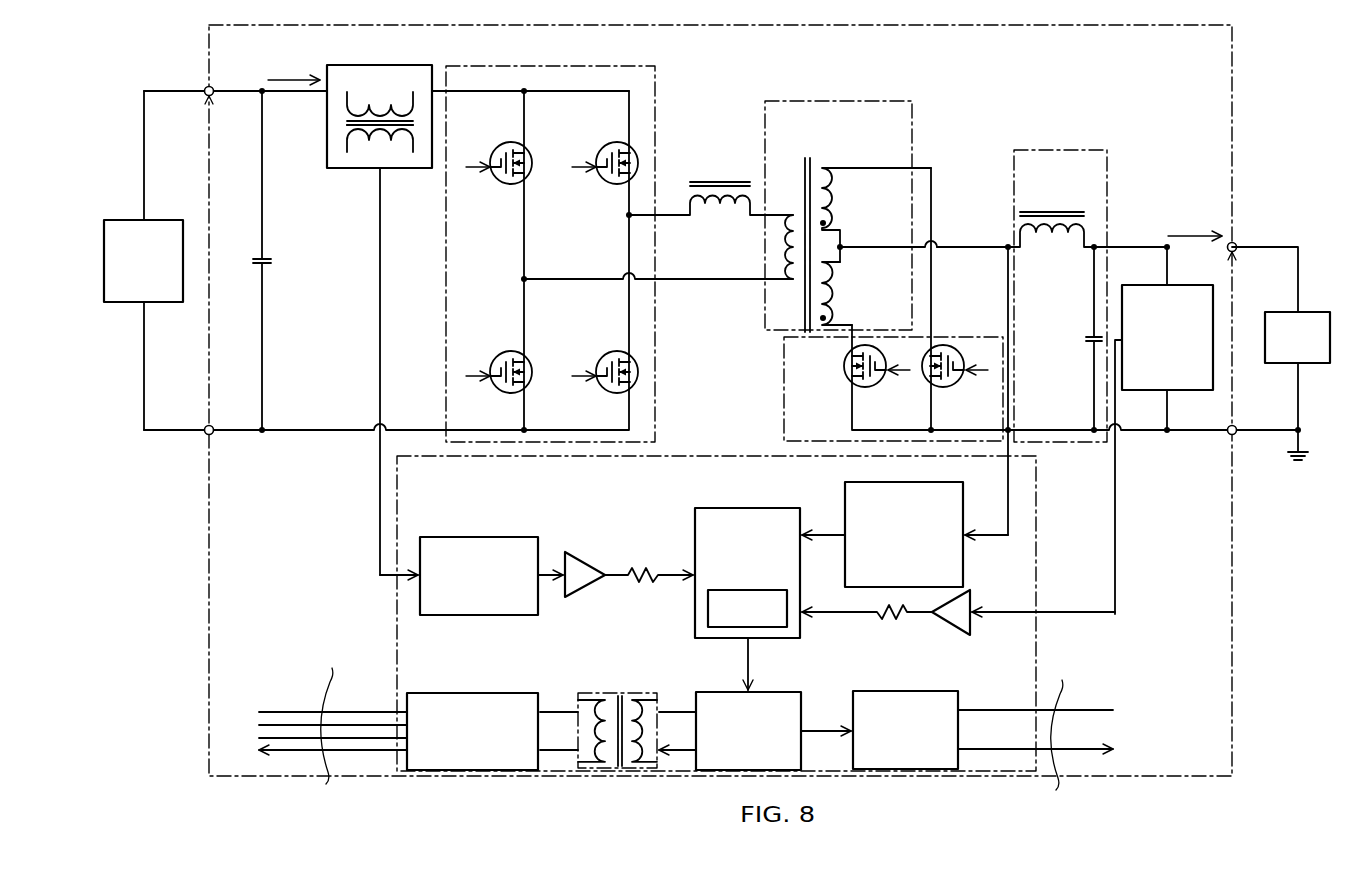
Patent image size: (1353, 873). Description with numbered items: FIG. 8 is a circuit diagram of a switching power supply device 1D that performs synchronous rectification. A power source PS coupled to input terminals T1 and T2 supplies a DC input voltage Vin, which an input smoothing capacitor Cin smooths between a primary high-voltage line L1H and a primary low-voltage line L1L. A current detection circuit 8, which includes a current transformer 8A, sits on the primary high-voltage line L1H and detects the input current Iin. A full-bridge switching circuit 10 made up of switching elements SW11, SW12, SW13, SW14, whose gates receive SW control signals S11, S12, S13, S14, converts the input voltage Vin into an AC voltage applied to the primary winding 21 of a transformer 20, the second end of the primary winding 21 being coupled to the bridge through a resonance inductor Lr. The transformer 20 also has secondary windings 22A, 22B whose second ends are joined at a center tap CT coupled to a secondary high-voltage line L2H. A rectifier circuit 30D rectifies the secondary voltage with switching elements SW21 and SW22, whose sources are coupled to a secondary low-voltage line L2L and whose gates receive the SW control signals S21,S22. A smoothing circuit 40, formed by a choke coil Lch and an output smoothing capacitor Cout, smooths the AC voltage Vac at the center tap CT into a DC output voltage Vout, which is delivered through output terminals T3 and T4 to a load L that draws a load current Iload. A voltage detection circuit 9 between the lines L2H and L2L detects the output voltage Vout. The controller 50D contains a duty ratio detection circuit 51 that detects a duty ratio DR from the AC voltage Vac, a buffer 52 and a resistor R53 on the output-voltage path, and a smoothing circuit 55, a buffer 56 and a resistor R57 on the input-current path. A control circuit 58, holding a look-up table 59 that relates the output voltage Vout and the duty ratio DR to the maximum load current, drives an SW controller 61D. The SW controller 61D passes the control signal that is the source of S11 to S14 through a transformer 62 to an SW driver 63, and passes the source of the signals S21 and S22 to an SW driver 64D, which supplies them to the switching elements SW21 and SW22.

The switching power supply device 1D is at (676, 27).
The power source PS is at (150, 219).
The input terminal T1 is at (208, 86).
The input terminal T2 is at (206, 437).
The primary high-voltage line L1H is at (237, 88).
The primary low-voltage line L1L is at (237, 437).
The input smoothing capacitor Cin is at (254, 256).
The input voltage Vin is at (292, 98).
The input current Iin is at (294, 65).
The current detection circuit 8 is at (343, 66).
The current transformer 8A is at (418, 142).
The switching circuit 10 is at (548, 66).
The switching element SW11 is at (510, 140).
The switching element SW12 is at (510, 349).
The switching element SW13 is at (616, 140).
The switching element SW14 is at (616, 349).
The SW control signal S11 is at (468, 168).
The SW control signal S12 is at (468, 377).
The SW control signal S13 is at (574, 168).
The SW control signal S14 is at (574, 377).
The resonance inductor Lr is at (720, 180).
The transformer 20 is at (790, 101).
The primary winding 21 is at (794, 210).
The secondary winding 22A is at (834, 199).
The secondary winding 22B is at (834, 293).
The center tap CT is at (843, 246).
The AC voltage Vac is at (963, 251).
The secondary high-voltage line L2H is at (962, 244).
The secondary low-voltage line L2L is at (1064, 432).
The rectifier circuit 30D is at (778, 396).
The switching element SW21 is at (850, 383).
The switching element SW22 is at (920, 383).
The SW control signal S21 is at (905, 370).
The SW control signal S22 is at (983, 370).
The smoothing circuit 40 is at (1060, 148).
The choke coil Lch is at (1052, 210).
The output smoothing capacitor Cout is at (1086, 334).
The output voltage Vout is at (1156, 244).
The load current Iload is at (1197, 220).
The output terminal T3 is at (1238, 240).
The output terminal T4 is at (1236, 436).
The voltage detection circuit 9 is at (1178, 282).
The load L is at (1284, 312).
The controller 50D is at (1038, 646).
The duty ratio detection circuit 51 is at (906, 482).
The buffer 52 is at (964, 627).
The resistor R53 is at (888, 628).
The smoothing circuit 55 is at (498, 538).
The buffer 56 is at (576, 563).
The resistor R57 is at (644, 568).
The control circuit 58 is at (728, 506).
The LUT 59 is at (708, 608).
The duty ratio DR is at (828, 542).
The SW controller 61D is at (776, 694).
The transformer 62 is at (618, 698).
The SW driver 63 is at (476, 694).
The SW driver 64D is at (946, 692).
The SW control signals S21,S22 is at (1064, 694).